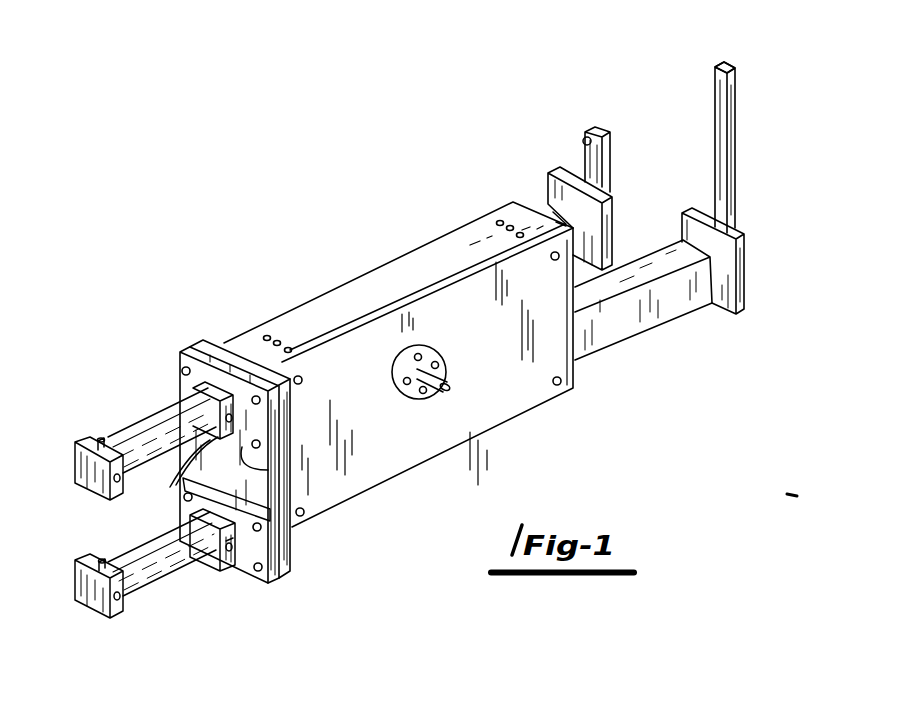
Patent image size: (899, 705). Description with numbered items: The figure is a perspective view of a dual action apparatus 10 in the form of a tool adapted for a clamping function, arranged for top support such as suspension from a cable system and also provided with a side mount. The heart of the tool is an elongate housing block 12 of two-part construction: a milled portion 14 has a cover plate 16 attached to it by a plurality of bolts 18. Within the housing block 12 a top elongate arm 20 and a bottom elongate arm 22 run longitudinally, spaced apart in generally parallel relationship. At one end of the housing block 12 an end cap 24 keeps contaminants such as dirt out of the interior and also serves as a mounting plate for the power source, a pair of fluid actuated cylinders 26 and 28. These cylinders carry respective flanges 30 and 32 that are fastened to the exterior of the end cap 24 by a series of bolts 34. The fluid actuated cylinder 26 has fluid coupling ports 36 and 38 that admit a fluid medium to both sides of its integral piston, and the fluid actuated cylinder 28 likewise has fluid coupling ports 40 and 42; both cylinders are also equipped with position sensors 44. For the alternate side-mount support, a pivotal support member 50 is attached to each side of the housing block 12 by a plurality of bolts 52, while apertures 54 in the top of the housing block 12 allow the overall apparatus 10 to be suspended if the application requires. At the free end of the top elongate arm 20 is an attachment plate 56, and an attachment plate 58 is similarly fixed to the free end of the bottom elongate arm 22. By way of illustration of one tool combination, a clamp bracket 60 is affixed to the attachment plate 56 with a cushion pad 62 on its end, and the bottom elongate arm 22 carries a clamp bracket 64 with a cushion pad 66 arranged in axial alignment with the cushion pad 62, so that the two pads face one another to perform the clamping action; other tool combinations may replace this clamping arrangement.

The dual action apparatus 10 is at (377, 214).
The housing block 12 is at (427, 245).
The milled portion 14 is at (380, 287).
The cover plate 16 is at (498, 402).
The bolts 18 is at (306, 518).
The top elongate arm 20 is at (547, 198).
The bottom elongate arm 22 is at (643, 300).
The end cap 24 is at (197, 342).
The fluid actuated cylinder 26 is at (134, 418).
The fluid actuated cylinder 28 is at (165, 590).
The flange 30 is at (190, 386).
The flange 32 is at (246, 582).
The bolts 34 is at (184, 484).
The fluid coupling port 36 is at (76, 475).
The fluid coupling port 38 is at (200, 462).
The fluid coupling port 40 is at (120, 617).
The fluid coupling port 42 is at (233, 566).
The position sensors 44 is at (100, 446).
The pivotal support member 50 is at (453, 378).
The bolts 52 is at (418, 399).
The apertures 54 is at (265, 336).
The attachment plate 56 is at (562, 172).
The attachment plate 58 is at (746, 293).
The clamp bracket 60 is at (611, 172).
The cushion pad 62 is at (584, 137).
The clamp bracket 64 is at (737, 165).
The cushion pad 66 is at (736, 73).